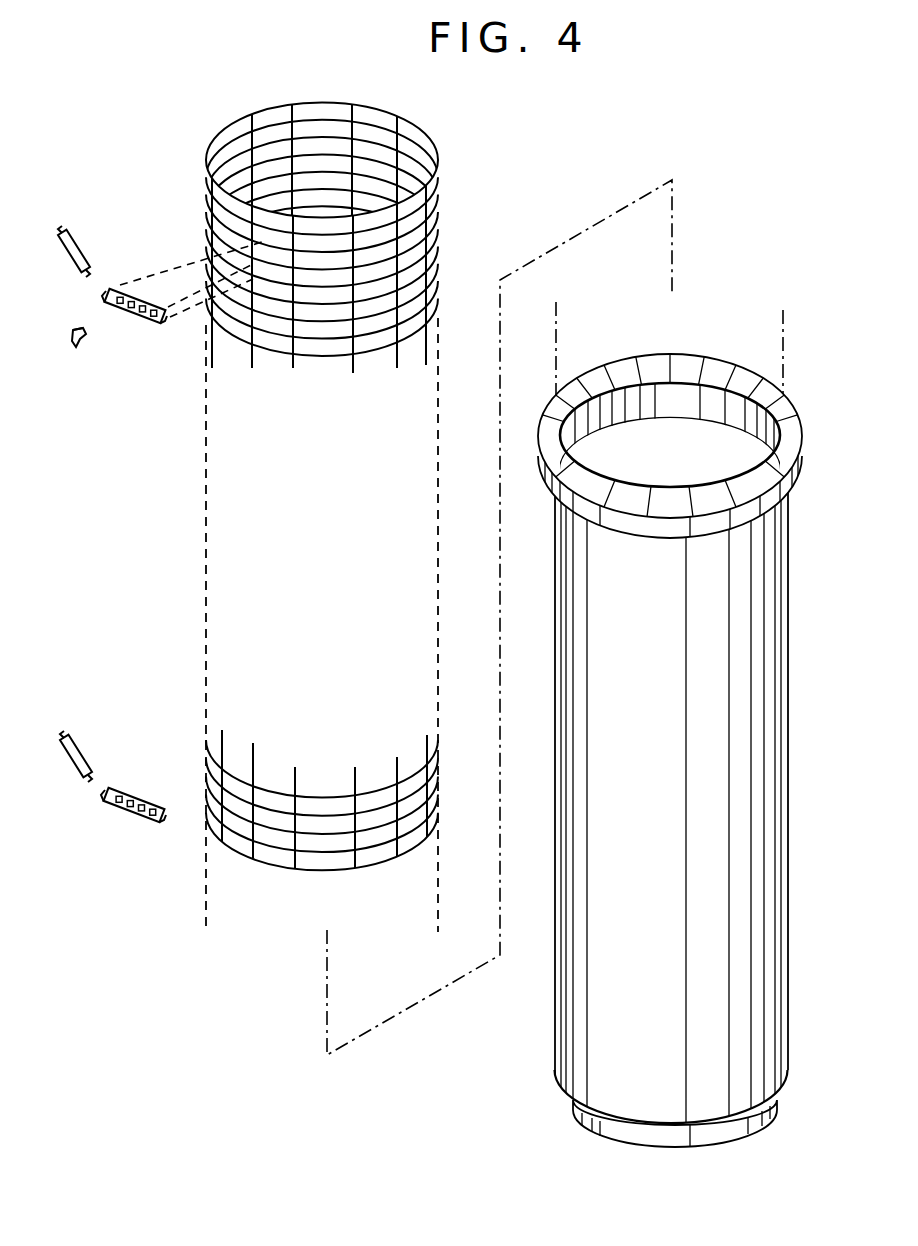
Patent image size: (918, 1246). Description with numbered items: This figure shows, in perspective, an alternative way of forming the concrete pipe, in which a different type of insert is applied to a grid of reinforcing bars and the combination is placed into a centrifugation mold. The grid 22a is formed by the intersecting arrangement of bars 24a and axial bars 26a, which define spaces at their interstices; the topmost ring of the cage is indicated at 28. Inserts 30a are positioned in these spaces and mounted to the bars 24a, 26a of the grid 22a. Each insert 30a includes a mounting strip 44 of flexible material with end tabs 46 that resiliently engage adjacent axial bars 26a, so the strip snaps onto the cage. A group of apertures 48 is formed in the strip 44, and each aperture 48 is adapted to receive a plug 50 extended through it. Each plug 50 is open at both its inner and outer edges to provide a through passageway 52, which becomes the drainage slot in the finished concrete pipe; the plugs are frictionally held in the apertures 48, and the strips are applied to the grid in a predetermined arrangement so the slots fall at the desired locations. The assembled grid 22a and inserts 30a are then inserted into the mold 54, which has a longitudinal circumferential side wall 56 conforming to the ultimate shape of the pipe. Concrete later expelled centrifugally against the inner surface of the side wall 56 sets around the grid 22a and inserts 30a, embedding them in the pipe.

The grid 22a is at (463, 170).
The bar 24a is at (428, 218).
The axial bar 26a is at (428, 258).
The top ring 28 is at (408, 138).
The insert 30a is at (134, 333).
The mounting strip 44 is at (167, 330).
The end tab 46 is at (106, 297).
The aperture 48 is at (129, 303).
The plug 50 is at (87, 317).
The through passageway 52 is at (73, 343).
The mold 54 is at (548, 608).
The longitudinal circumferential side wall 56 is at (548, 905).